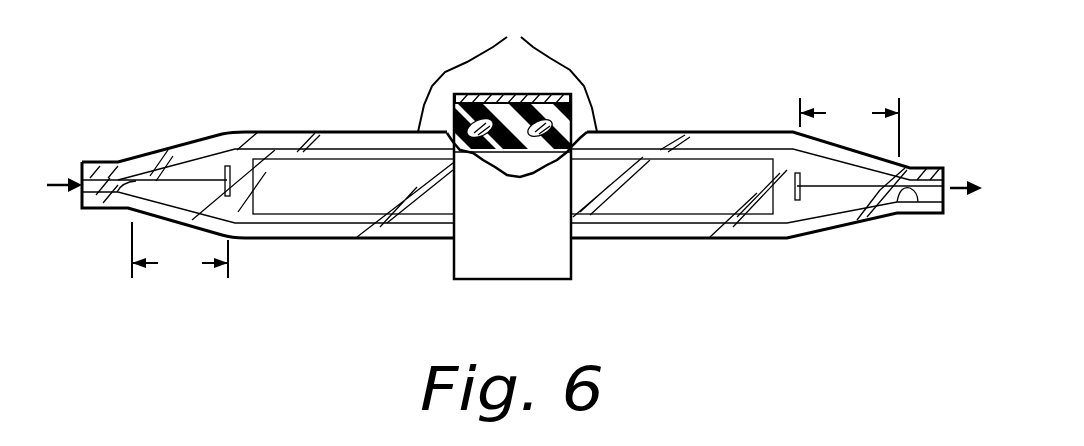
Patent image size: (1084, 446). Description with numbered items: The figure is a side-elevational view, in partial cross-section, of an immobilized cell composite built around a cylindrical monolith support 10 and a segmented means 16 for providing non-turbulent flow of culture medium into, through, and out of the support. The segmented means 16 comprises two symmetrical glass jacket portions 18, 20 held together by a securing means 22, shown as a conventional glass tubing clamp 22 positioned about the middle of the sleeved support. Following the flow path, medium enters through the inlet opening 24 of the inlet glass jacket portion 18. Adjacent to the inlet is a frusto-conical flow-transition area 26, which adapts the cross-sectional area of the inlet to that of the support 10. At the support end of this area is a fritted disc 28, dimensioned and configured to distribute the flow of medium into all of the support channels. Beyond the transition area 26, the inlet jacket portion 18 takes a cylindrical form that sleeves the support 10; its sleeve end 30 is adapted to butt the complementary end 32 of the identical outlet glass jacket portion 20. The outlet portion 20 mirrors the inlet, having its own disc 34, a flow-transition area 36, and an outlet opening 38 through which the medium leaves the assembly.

The cylindrical monolith support 10 is at (280, 170).
The segmented means for providing non-turbulent flow 16 is at (515, 94).
The inlet glass jacket portion 18 is at (357, 240).
The outlet glass jacket portion 20 is at (660, 240).
The glass tubing clamp 22 is at (517, 270).
The inlet opening 24 is at (77, 193).
The flow-transition area 26 is at (180, 252).
The fritted disc 28 is at (225, 175).
The sleeve end 30 is at (479, 136).
The complementary end 32 is at (546, 135).
The disc 34 is at (797, 192).
The flow-transition area 36 is at (849, 127).
The outlet opening 38 is at (952, 180).